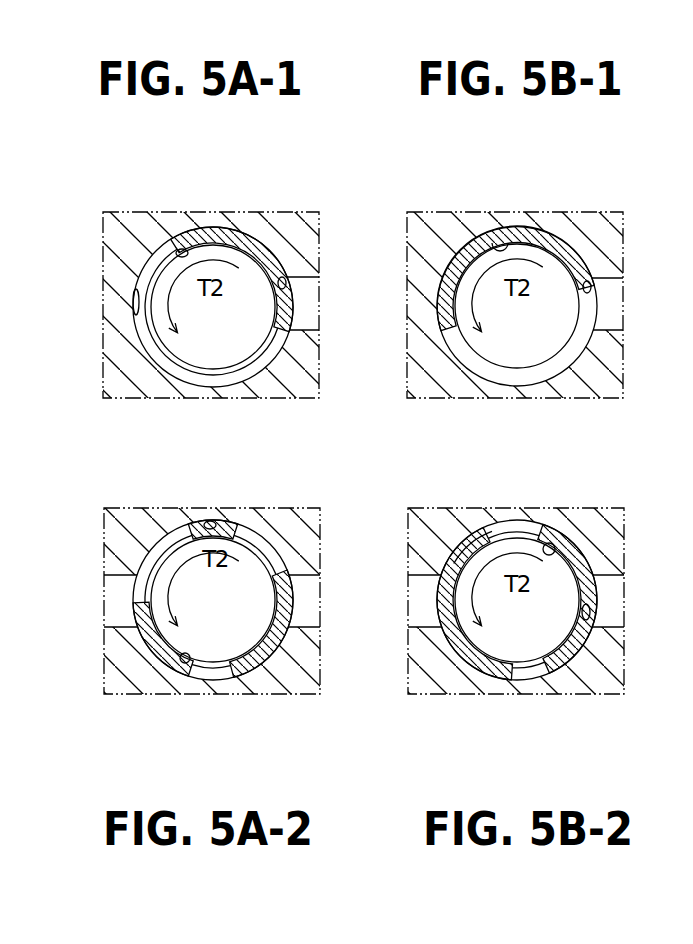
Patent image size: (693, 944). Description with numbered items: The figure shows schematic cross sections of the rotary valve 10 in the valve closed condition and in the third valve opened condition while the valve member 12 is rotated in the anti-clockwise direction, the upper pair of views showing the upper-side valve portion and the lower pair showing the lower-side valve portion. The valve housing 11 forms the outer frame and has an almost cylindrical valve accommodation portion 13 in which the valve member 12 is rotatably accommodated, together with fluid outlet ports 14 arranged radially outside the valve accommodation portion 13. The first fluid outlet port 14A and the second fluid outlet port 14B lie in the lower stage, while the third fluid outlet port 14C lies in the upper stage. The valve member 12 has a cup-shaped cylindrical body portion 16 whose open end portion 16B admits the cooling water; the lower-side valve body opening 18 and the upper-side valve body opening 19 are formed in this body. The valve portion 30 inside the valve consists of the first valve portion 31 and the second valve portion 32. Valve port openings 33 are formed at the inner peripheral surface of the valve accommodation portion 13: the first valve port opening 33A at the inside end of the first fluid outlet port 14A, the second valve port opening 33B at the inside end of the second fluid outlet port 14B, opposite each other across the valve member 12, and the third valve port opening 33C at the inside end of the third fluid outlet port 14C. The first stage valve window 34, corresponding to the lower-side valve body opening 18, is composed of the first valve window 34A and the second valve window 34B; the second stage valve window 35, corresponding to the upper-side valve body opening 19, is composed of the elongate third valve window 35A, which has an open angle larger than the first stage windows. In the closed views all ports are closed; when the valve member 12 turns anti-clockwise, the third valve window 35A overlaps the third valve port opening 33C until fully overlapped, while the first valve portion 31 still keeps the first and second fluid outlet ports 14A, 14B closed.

In FIG. 5A-1, the rotary valve 10 is at (286, 194).
In FIG. 5A-1, the valve housing 11 is at (220, 305).
In FIG. 5B-1, the valve housing 11 is at (542, 305).
In FIG. 5A-2, the valve housing 11 is at (215, 601).
In FIG. 5B-2, the valve housing 11 is at (530, 595).
In FIG. 5A-1, the valve member 12 is at (213, 347).
In FIG. 5B-1, the valve member 12 is at (517, 347).
In FIG. 5A-2, the valve member 12 is at (213, 561).
In FIG. 5B-2, the valve member 12 is at (517, 561).
In FIG. 5A-1, the valve accommodation portion 13 is at (140, 283).
In FIG. 5A-2, the valve accommodation portion 13 is at (214, 524).
In FIG. 5A-1, the fluid outlet ports 14 is at (332, 315).
In FIG. 5B-1, the fluid outlet ports 14 is at (635, 319).
In FIG. 5A-2, the fluid outlet ports 14 is at (215, 601).
In FIG. 5B-2, the fluid outlet ports 14 is at (530, 600).
In FIG. 5A-2, the first fluid outlet port 14A is at (307, 592).
In FIG. 5B-2, the first fluid outlet port 14A is at (613, 590).
In FIG. 5A-2, the second fluid outlet port 14B is at (113, 605).
In FIG. 5B-2, the second fluid outlet port 14B is at (420, 608).
In FIG. 5A-1, the third fluid outlet port 14C is at (307, 313).
In FIG. 5B-1, the third fluid outlet port 14C is at (613, 317).
In FIG. 5A-1, the cylindrical body portion 16 is at (182, 383).
In FIG. 5B-1, the cylindrical body portion 16 is at (477, 373).
In FIG. 5A-2, the cylindrical body portion 16 is at (170, 537).
In FIG. 5B-2, the cylindrical body portion 16 is at (478, 537).
In FIG. 5A-1, the open end portion 16B is at (183, 247).
In FIG. 5B-1, the open end portion 16B is at (498, 243).
In FIG. 5A-2, the open end portion 16B is at (190, 673).
In FIG. 5B-2, the open end portion 16B is at (555, 553).
In FIG. 5A-2, the lower-side valve body opening 18 is at (227, 602).
In FIG. 5A-1, the upper-side valve body opening 19 is at (256, 362).
In FIG. 5A-1, the valve portion 30 is at (99, 420).
In FIG. 5A-2, the first valve portion 31 is at (144, 537).
In FIG. 5B-2, the first valve portion 31 is at (496, 694).
In FIG. 5A-1, the second valve portion 32 is at (146, 366).
In FIG. 5B-1, the second valve portion 32 is at (512, 213).
In FIG. 5A-1, the valve port openings 33 is at (273, 265).
In FIG. 5B-1, the valve port openings 33 is at (531, 247).
In FIG. 5A-2, the valve port openings 33 is at (220, 633).
In FIG. 5B-2, the valve port openings 33 is at (531, 635).
In FIG. 5A-2, the first valve port opening 33A is at (282, 647).
In FIG. 5B-2, the first valve port opening 33A is at (590, 645).
In FIG. 5A-2, the second valve port opening 33B is at (140, 635).
In FIG. 5B-2, the second valve port opening 33B is at (448, 635).
In FIG. 5A-1, the third valve port opening 33C is at (284, 274).
In FIG. 5B-1, the third valve port opening 33C is at (588, 287).
In FIG. 5A-2, the first stage valve window 34 is at (217, 641).
In FIG. 5B-2, the first stage valve window 34 is at (537, 607).
In FIG. 5A-2, the first valve window 34A is at (268, 556).
In FIG. 5B-2, the first valve window 34A is at (518, 530).
In FIG. 5A-2, the second valve window 34B is at (218, 670).
In FIG. 5B-2, the second valve window 34B is at (558, 660).
In FIG. 5A-1, the second stage valve window 35 is at (213, 307).
In FIG. 5A-1, the third valve window 35A is at (255, 345).
In FIG. 5B-1, the third valve window 35A is at (558, 362).